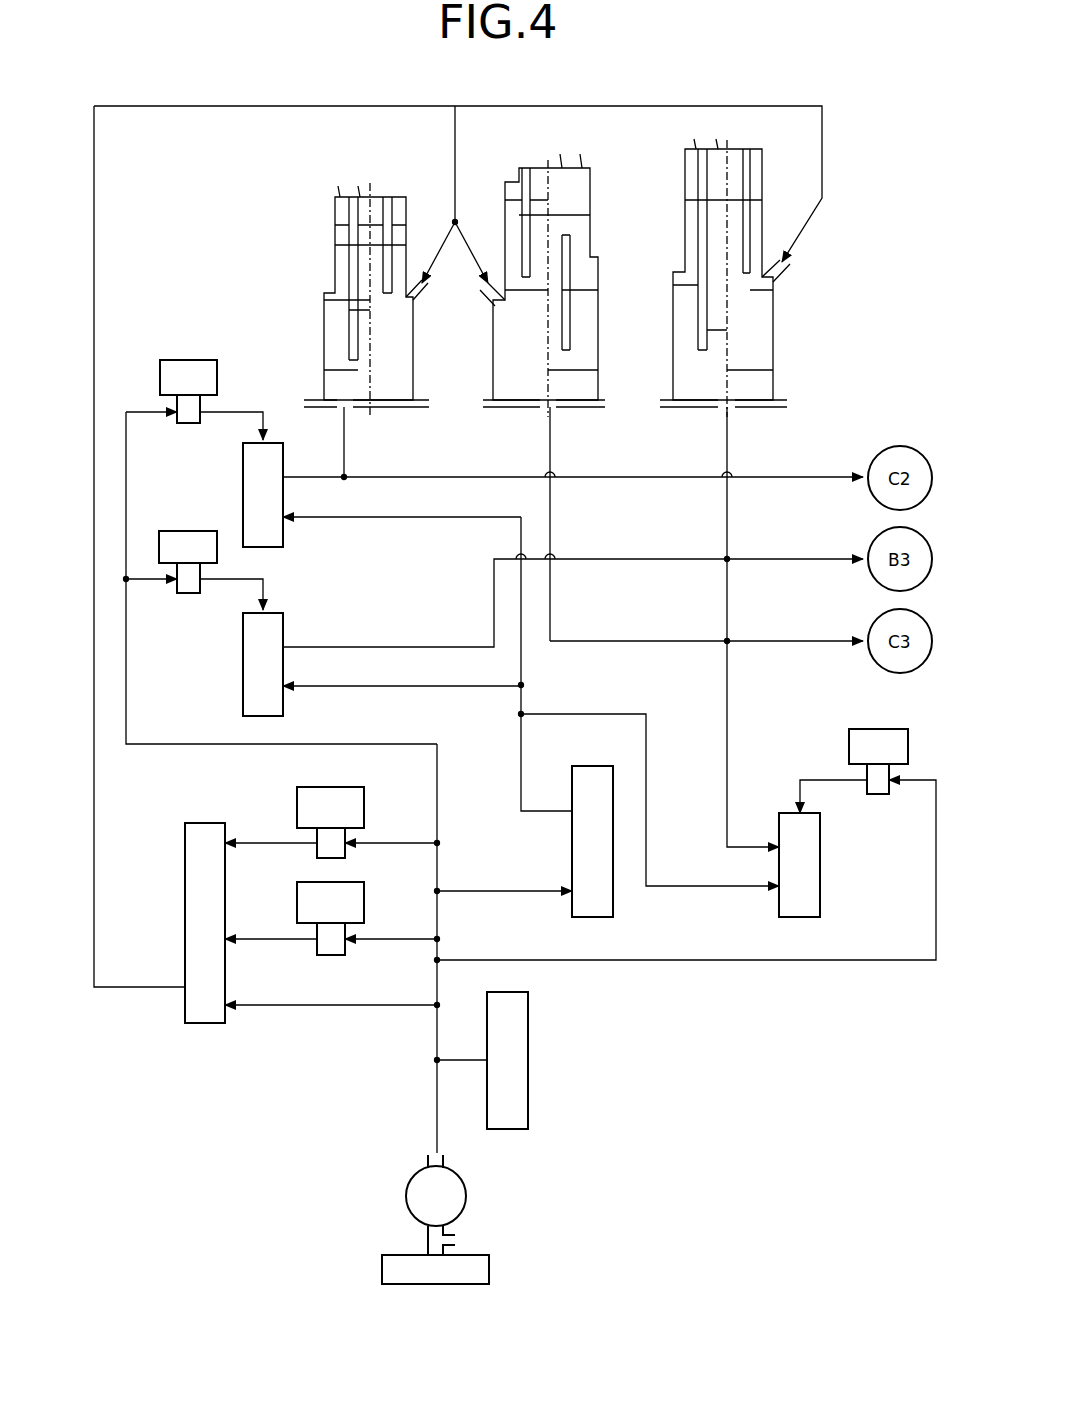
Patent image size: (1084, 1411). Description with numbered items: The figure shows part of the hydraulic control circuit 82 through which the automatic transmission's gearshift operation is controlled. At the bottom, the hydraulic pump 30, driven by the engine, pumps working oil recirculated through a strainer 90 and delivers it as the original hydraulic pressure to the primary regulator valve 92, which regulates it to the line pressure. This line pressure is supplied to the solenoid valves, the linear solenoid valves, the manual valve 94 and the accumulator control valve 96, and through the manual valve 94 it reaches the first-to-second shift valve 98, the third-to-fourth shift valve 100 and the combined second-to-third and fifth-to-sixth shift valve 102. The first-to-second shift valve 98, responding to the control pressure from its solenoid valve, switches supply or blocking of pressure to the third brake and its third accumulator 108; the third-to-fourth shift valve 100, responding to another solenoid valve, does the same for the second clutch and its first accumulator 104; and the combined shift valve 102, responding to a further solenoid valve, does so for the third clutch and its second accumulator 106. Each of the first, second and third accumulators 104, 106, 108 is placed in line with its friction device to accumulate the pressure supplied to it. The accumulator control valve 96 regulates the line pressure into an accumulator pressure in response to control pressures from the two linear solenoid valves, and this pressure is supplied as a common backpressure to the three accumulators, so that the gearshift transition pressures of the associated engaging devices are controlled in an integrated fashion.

The hydraulic control circuit 82 is at (856, 72).
The first accumulator 104 is at (303, 295).
The second accumulator 106 is at (606, 278).
The third accumulator 108 is at (662, 225).
The 3-4 shift valve 100 is at (250, 500).
The 1-2 shift valve 98 is at (250, 668).
The 2-3 and 5-6 shift valve 102 is at (815, 868).
The manual valve 94 is at (592, 910).
The accumulator control valve 96 is at (203, 1018).
The primary regulator valve 92 is at (505, 1123).
The hydraulic pump 30 is at (420, 1175).
The strainer 90 is at (462, 1280).